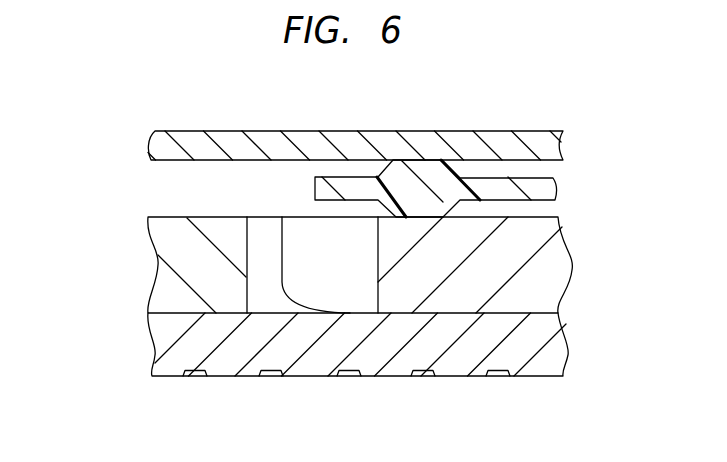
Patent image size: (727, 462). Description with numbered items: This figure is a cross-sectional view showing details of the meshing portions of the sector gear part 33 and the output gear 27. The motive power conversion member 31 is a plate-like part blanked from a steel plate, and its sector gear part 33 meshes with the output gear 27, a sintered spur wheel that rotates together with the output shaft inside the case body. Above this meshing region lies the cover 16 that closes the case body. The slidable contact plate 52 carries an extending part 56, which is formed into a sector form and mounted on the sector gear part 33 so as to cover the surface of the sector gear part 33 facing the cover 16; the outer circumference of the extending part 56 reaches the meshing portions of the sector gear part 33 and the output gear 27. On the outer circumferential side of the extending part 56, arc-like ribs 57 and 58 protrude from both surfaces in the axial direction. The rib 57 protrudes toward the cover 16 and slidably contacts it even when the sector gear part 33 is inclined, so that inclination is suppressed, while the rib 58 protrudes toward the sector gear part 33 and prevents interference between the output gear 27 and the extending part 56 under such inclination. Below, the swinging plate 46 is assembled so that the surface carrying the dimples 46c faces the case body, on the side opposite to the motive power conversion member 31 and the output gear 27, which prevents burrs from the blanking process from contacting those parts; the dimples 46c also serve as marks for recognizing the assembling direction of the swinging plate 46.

The cover 16 is at (489, 129).
The slidable contact plate 52 is at (475, 260).
The extending part 56 is at (338, 180).
The rib 57 is at (417, 165).
The rib 58 is at (417, 208).
The output gear 27 is at (152, 273).
The motive power conversion member 31 is at (352, 330).
The sector gear part 33 is at (323, 290).
The swinging plate 46 is at (411, 378).
The dimples 46c is at (198, 377).